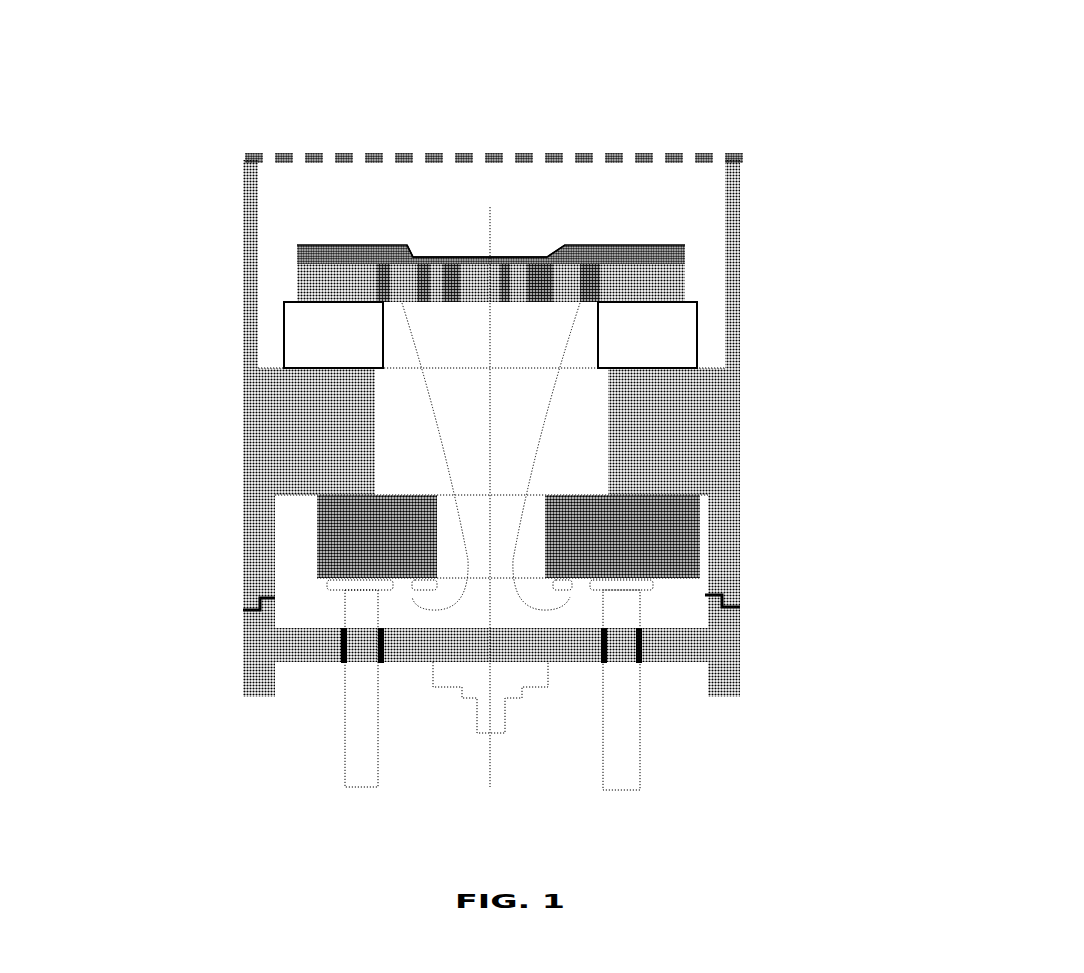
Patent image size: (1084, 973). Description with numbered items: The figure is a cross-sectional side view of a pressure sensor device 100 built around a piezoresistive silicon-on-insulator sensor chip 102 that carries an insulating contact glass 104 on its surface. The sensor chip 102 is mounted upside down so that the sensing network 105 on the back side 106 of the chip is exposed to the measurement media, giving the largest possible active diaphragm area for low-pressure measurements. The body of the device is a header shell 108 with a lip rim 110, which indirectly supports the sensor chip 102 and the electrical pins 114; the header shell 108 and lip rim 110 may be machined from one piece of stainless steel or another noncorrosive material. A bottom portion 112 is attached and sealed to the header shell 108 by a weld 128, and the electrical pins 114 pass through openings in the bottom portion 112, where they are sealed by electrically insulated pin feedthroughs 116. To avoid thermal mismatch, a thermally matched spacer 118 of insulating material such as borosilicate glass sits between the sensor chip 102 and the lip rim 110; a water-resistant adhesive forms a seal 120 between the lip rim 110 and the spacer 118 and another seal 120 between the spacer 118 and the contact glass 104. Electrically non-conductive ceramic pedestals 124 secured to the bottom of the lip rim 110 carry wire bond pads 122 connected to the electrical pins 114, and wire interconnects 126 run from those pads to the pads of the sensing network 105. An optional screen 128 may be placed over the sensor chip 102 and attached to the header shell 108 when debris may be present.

The pressure sensor device 100 is at (548, 90).
The sensor chip 102 is at (691, 251).
The contact glass 104 is at (671, 288).
The sensing network 105 is at (446, 212).
The back side of sensor chip 106 is at (668, 240).
The header shell 108 is at (719, 543).
The lip rim 110 is at (663, 442).
The bottom portion 112 is at (422, 644).
The electrical pins 114 is at (616, 733).
The pin feedthroughs 116 is at (341, 649).
The spacer 118 is at (668, 333).
The seal 120 is at (321, 367).
The wire bond pads 122 is at (404, 577).
The ceramic pedestal 124 is at (664, 513).
The wire interconnects 126 is at (802, 573).
The screen 128 is at (296, 151).